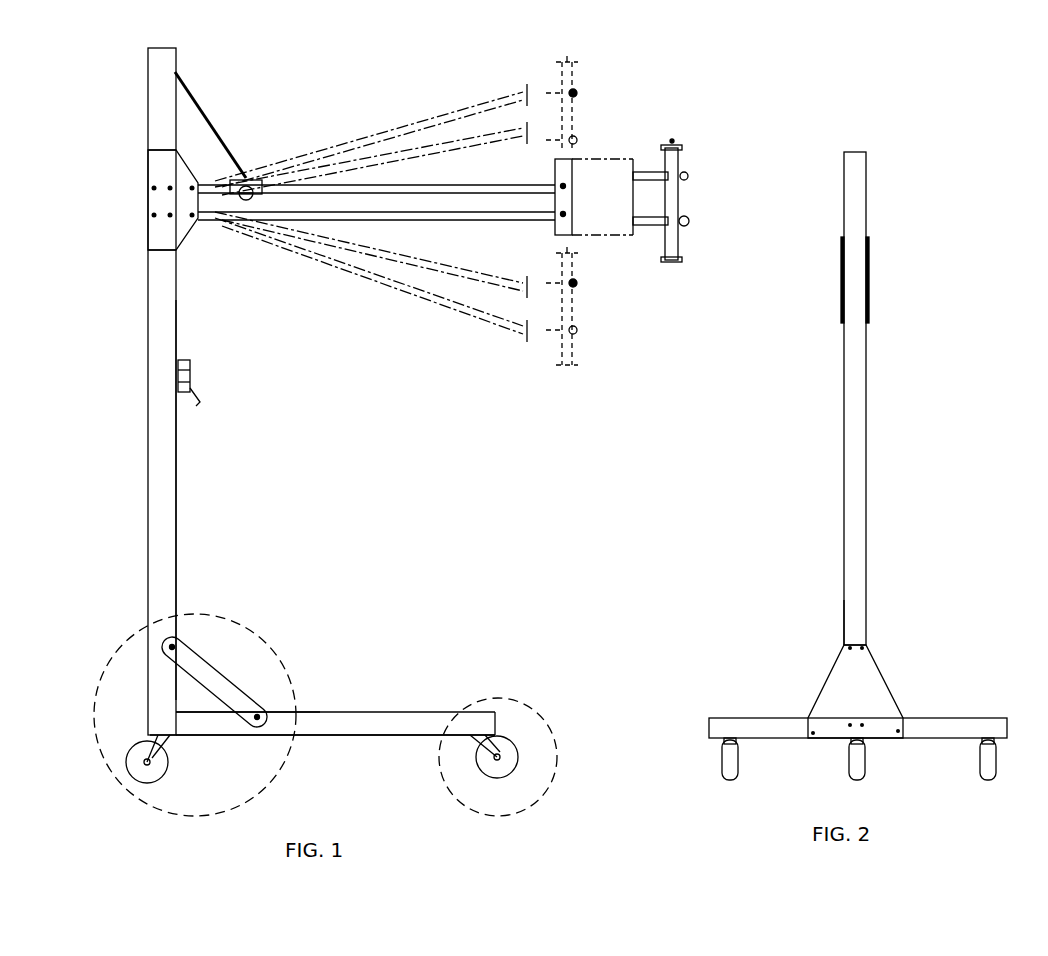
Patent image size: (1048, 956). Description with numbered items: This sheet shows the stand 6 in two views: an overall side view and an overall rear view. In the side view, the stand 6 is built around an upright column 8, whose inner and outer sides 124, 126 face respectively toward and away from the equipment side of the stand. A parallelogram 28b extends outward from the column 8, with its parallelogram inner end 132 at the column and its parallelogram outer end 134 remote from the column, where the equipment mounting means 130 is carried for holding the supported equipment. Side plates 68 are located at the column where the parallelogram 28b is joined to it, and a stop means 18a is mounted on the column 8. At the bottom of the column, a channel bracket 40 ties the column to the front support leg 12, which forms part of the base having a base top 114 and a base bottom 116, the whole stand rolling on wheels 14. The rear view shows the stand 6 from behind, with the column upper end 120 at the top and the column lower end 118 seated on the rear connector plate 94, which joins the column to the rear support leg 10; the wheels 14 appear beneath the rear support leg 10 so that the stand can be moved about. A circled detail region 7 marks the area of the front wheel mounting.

In FIG. 1, the stand 6 is at (318, 523).
In FIG. 2, the stand 6 is at (900, 432).
In FIG. 1, the detail area of caster mounting 7 is at (150, 815).
In FIG. 1, the column 8 is at (148, 122).
In FIG. 2, the rear support leg 10 is at (938, 727).
In FIG. 1, the front support leg 12 is at (397, 722).
In FIG. 1, the wheels 14 is at (140, 750).
In FIG. 2, the wheels 14 is at (727, 767).
In FIG. 1, the stop means 18a is at (197, 378).
In FIG. 1, the parallelogram 28b is at (370, 140).
In FIG. 1, the channel bracket 40 is at (215, 672).
In FIG. 1, the side plates 68 is at (170, 236).
In FIG. 2, the rear connector plate 94 is at (847, 690).
In FIG. 1, the base top 114 is at (320, 712).
In FIG. 1, the base bottom 116 is at (372, 735).
In FIG. 2, the column lower end 118 is at (845, 617).
In FIG. 2, the column upper end 120 is at (853, 178).
In FIG. 1, the inner side 124 is at (180, 488).
In FIG. 1, the outer side 126 is at (148, 457).
In FIG. 1, the equipment mounting means 130 is at (720, 180).
In FIG. 1, the parallelogram inner end 132 is at (252, 143).
In FIG. 1, the parallelogram outer end 134 is at (487, 88).